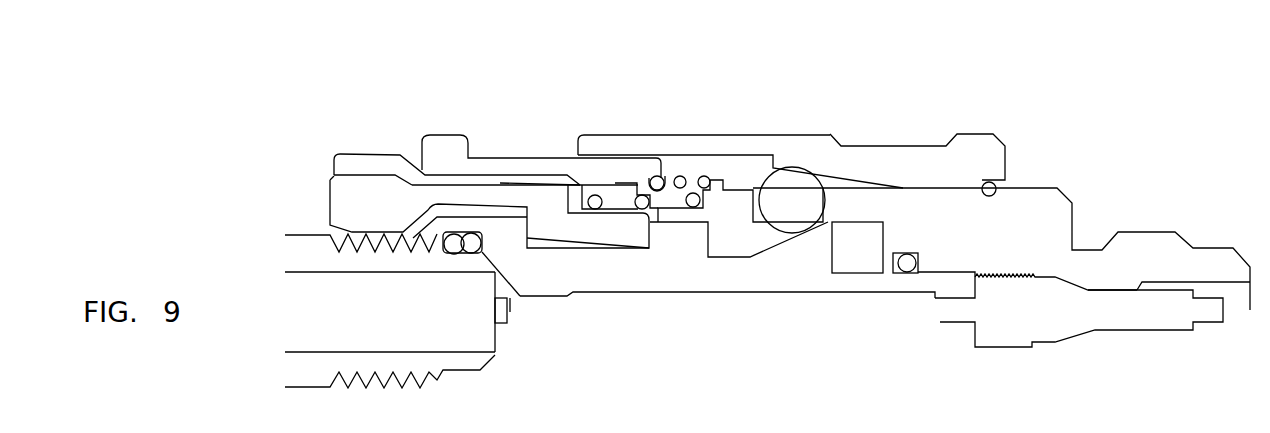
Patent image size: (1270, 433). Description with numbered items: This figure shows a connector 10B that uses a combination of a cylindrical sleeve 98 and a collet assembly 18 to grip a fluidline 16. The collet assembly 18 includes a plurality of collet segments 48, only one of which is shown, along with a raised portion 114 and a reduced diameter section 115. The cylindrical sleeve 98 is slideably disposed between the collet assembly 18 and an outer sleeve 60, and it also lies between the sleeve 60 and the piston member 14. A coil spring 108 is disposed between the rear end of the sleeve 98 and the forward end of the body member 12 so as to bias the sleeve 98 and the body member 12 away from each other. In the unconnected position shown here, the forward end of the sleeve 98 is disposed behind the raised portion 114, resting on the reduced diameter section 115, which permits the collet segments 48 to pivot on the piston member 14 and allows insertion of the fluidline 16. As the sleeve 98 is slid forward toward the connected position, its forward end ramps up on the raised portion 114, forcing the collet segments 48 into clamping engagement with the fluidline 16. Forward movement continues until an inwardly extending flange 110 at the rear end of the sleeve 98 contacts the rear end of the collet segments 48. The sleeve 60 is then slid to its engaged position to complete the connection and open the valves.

The connector 10B is at (1092, 157).
The body member 12 is at (1100, 233).
The piston member 14 is at (712, 275).
The fluidline 16 is at (306, 369).
The collet assembly 18 is at (328, 157).
The collet segments 48 is at (355, 203).
The sleeve 60 is at (850, 160).
The cylindrical sleeve 98 is at (553, 157).
The coil spring 108 is at (718, 178).
The inwardly extending flange 110 is at (672, 178).
The raised portion 114 is at (385, 157).
The reduced diameter section 115 is at (545, 157).